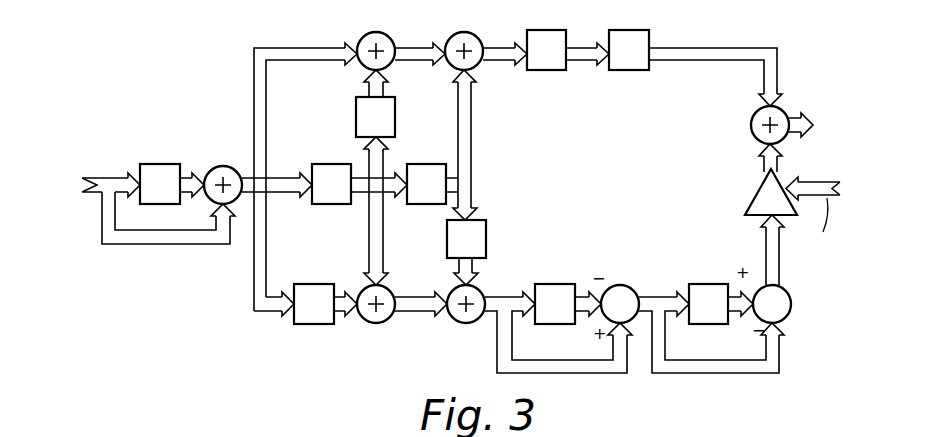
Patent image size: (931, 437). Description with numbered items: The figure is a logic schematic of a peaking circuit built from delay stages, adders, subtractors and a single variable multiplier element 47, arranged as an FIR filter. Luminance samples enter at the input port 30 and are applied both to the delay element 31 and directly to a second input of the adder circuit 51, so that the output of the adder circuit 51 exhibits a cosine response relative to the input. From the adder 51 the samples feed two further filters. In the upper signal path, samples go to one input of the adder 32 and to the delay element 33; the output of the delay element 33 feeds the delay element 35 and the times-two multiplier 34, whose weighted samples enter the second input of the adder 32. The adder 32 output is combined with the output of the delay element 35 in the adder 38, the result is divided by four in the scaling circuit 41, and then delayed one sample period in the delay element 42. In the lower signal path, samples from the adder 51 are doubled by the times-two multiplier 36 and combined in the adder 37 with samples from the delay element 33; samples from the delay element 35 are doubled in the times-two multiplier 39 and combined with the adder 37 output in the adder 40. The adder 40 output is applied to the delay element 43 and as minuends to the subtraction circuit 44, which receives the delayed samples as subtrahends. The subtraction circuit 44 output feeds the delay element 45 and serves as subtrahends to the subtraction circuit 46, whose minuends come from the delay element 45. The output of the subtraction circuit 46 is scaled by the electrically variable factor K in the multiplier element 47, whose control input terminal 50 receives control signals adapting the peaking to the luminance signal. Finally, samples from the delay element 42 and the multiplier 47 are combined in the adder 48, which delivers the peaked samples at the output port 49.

The input port 30 is at (92, 178).
The delay element 31 is at (155, 164).
The adder circuit 51 is at (222, 166).
The adder circuit 32 is at (362, 36).
The delay element 33 is at (330, 164).
The times-two multiplier 34 is at (356, 108).
The delay element 35 is at (425, 164).
The times-two multiplier 36 is at (311, 284).
The adder circuit 37 is at (364, 290).
The adder circuit 38 is at (451, 65).
The times-two multiplier 39 is at (486, 250).
The adder circuit 40 is at (464, 323).
The scaling circuit 41 is at (549, 70).
The delay element 42 is at (630, 70).
The delay element 43 is at (555, 284).
The subtraction circuit 44 is at (617, 285).
The delay element 45 is at (715, 284).
The subtraction circuit 46 is at (791, 310).
The multiplier element 47 is at (755, 197).
The adder 48 is at (751, 125).
The output port 49 is at (797, 112).
The control input terminal 50 is at (818, 182).